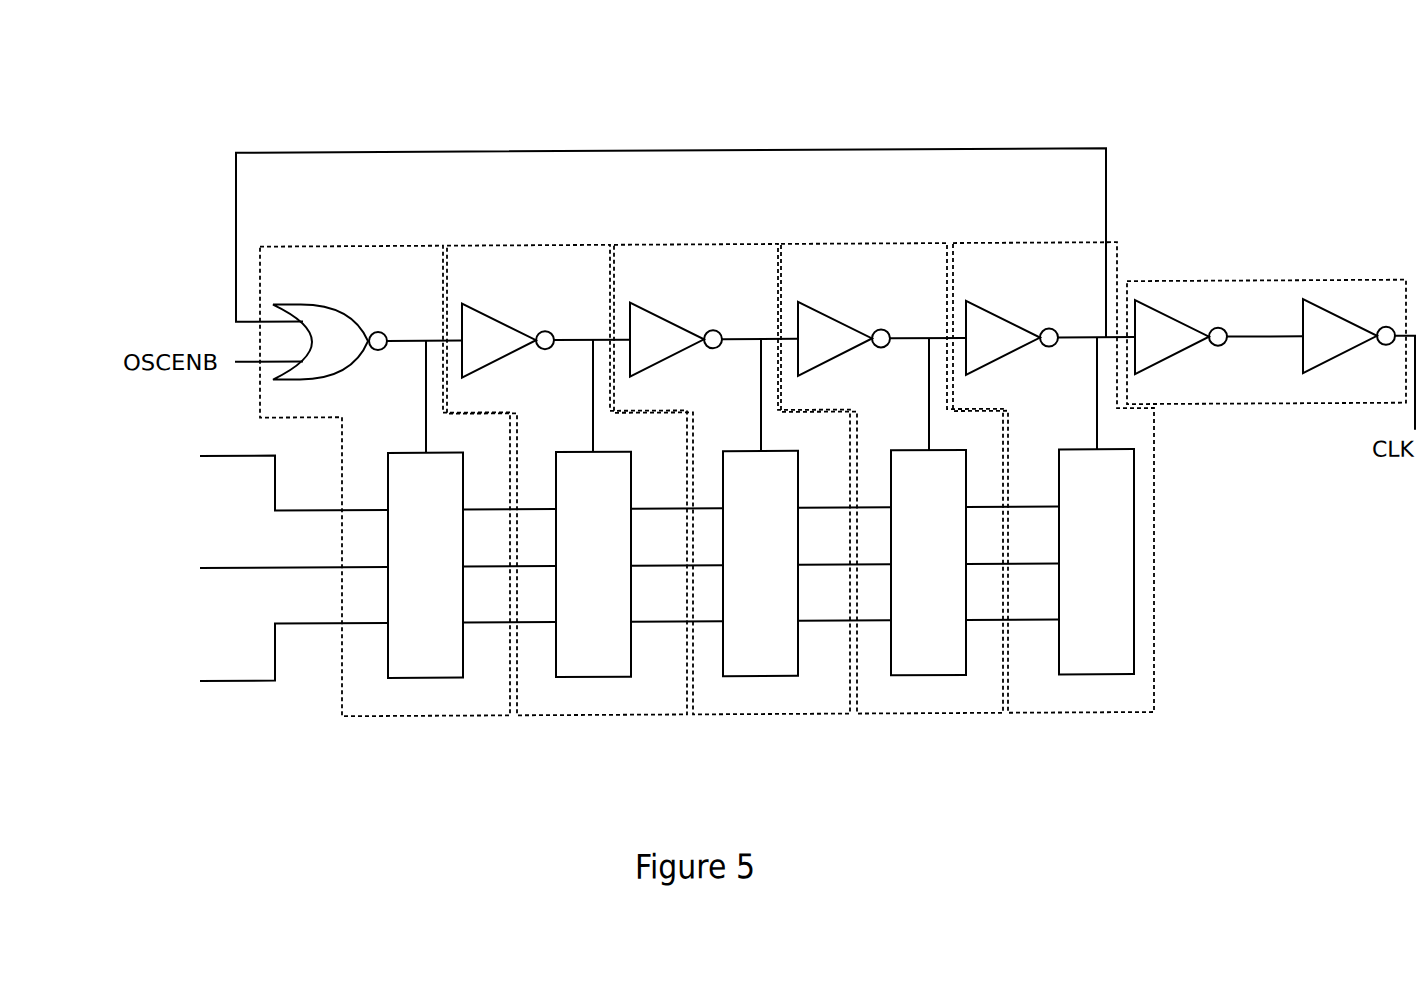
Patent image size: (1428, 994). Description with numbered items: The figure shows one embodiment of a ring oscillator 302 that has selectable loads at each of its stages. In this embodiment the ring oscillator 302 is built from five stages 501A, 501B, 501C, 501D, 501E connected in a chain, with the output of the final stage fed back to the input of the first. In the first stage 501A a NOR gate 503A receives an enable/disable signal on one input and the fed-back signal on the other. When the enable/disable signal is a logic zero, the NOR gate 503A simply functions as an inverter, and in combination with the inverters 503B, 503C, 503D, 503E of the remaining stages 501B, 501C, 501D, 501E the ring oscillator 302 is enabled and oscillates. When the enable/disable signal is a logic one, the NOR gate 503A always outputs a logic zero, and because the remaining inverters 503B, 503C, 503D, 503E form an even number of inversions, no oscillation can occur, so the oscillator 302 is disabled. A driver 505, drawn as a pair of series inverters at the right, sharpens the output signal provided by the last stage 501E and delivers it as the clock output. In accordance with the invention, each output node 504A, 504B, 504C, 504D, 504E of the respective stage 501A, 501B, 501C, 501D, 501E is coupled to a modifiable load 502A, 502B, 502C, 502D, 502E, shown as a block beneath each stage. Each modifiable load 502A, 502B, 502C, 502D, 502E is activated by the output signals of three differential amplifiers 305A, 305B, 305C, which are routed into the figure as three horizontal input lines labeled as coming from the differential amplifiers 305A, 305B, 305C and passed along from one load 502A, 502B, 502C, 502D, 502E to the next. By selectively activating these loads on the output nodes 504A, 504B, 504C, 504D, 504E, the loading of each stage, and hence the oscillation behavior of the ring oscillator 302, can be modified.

The ring oscillator 302 is at (1143, 90).
The differential amplifier 305A is at (261, 469).
The differential amplifier 305B is at (261, 567).
The differential amplifier 305C is at (261, 665).
The first stage 501A is at (383, 716).
The stage 501B is at (550, 716).
The stage 501C is at (720, 716).
The stage 501D is at (890, 716).
The last stage 501E is at (1082, 716).
The modifiable load 502A is at (425, 565).
The modifiable load 502B is at (593, 564).
The modifiable load 502C is at (760, 563).
The modifiable load 502D is at (928, 562).
The modifiable load 502E is at (1096, 561).
The NOR gate 503A is at (350, 305).
The inverter 503B is at (528, 303).
The inverter 503C is at (696, 303).
The inverter 503D is at (864, 303).
The inverter 503E is at (1032, 303).
The output node 504A is at (426, 428).
The output node 504B is at (593, 414).
The output node 504C is at (761, 414).
The output node 504D is at (929, 414).
The output node 504E is at (1097, 414).
The driver 505 is at (1268, 285).